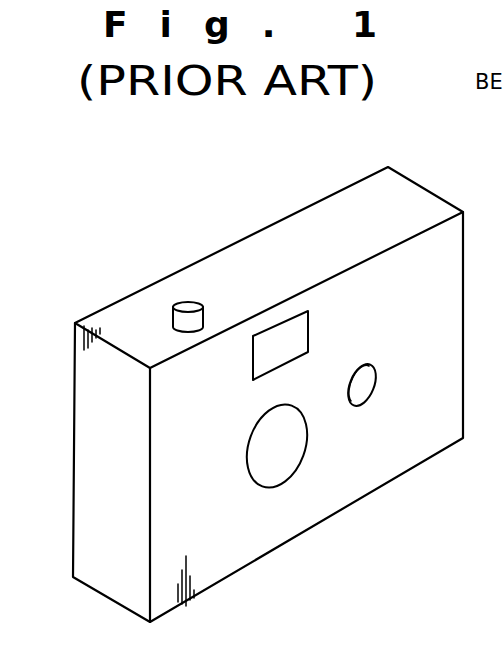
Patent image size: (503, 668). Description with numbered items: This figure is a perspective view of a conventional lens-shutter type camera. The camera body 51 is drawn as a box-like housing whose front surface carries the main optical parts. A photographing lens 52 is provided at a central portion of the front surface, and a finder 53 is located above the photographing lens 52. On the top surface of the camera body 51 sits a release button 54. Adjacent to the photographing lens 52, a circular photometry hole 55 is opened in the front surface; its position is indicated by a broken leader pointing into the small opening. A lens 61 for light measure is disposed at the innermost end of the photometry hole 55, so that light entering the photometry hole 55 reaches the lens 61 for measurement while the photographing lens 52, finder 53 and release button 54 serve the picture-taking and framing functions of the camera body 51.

The camera body 51 is at (100, 590).
The photographing lens 52 is at (262, 478).
The finder 53 is at (300, 325).
The release button 54 is at (188, 304).
The photometry hole 55 is at (378, 392).
The lens for light measure 61 is at (362, 405).